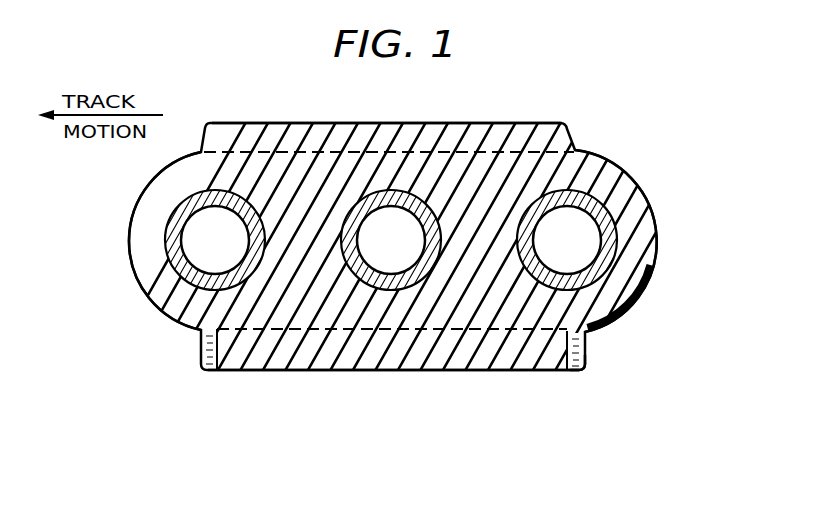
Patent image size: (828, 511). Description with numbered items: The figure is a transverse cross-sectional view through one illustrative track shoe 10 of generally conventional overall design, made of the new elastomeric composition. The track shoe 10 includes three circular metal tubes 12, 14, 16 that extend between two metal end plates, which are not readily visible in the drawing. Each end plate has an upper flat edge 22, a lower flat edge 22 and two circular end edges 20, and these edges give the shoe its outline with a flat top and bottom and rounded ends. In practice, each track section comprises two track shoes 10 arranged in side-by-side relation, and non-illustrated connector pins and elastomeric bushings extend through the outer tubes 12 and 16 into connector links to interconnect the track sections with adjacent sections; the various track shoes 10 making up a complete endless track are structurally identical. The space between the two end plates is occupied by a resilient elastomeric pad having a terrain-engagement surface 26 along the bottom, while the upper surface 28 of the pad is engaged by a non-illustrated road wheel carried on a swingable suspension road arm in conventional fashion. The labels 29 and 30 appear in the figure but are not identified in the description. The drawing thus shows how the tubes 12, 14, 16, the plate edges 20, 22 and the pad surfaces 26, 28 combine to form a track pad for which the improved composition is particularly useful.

The track shoe 10 is at (648, 178).
The circular metal tube 12 is at (237, 210).
The circular metal tube 14 is at (416, 209).
The circular metal tube 16 is at (552, 208).
The circular end edge 20 is at (657, 250).
The flat edge 22 is at (493, 152).
The terrain-engagement surface 26 is at (497, 372).
The upper surface 28 is at (250, 123).
The relief strip 29 is at (200, 345).
The bottom corner edge 30 is at (575, 372).